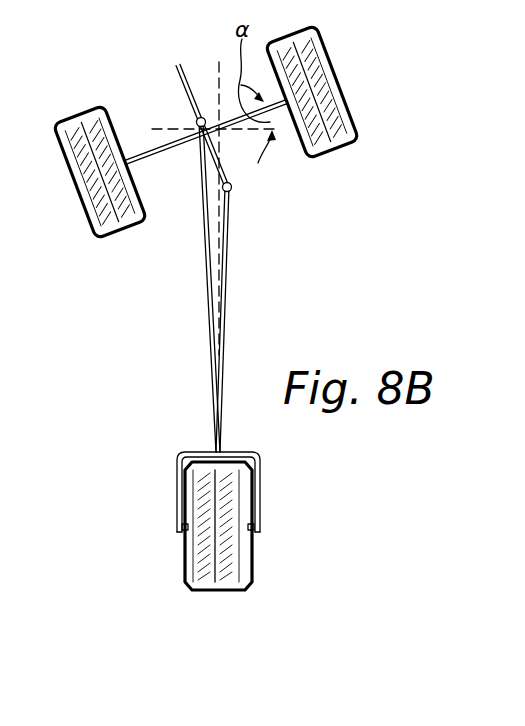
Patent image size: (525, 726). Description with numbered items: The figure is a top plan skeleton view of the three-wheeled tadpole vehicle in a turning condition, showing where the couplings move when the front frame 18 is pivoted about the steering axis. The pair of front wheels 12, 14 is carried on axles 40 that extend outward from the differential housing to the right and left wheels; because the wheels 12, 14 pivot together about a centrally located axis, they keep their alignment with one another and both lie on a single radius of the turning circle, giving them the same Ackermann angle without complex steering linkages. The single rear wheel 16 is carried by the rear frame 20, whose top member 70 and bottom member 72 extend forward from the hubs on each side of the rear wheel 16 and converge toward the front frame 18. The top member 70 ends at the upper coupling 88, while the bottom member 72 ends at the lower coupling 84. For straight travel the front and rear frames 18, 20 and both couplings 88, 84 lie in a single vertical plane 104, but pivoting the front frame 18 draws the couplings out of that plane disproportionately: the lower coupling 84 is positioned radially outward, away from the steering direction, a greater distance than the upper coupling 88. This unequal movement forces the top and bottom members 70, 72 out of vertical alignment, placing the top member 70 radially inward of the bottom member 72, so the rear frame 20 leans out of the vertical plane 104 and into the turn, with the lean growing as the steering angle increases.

The front wheel 12 is at (332, 60).
The front wheel 14 is at (64, 170).
The rear wheel 16 is at (252, 565).
The front frame 18 is at (183, 85).
The rear frame 20 is at (215, 350).
The axle 40 is at (145, 152).
The top member 70 is at (209, 290).
The bottom member 72 is at (227, 285).
The lower coupling 84 is at (231, 188).
The upper coupling 88 is at (197, 127).
The vertical plane 104 is at (219, 62).